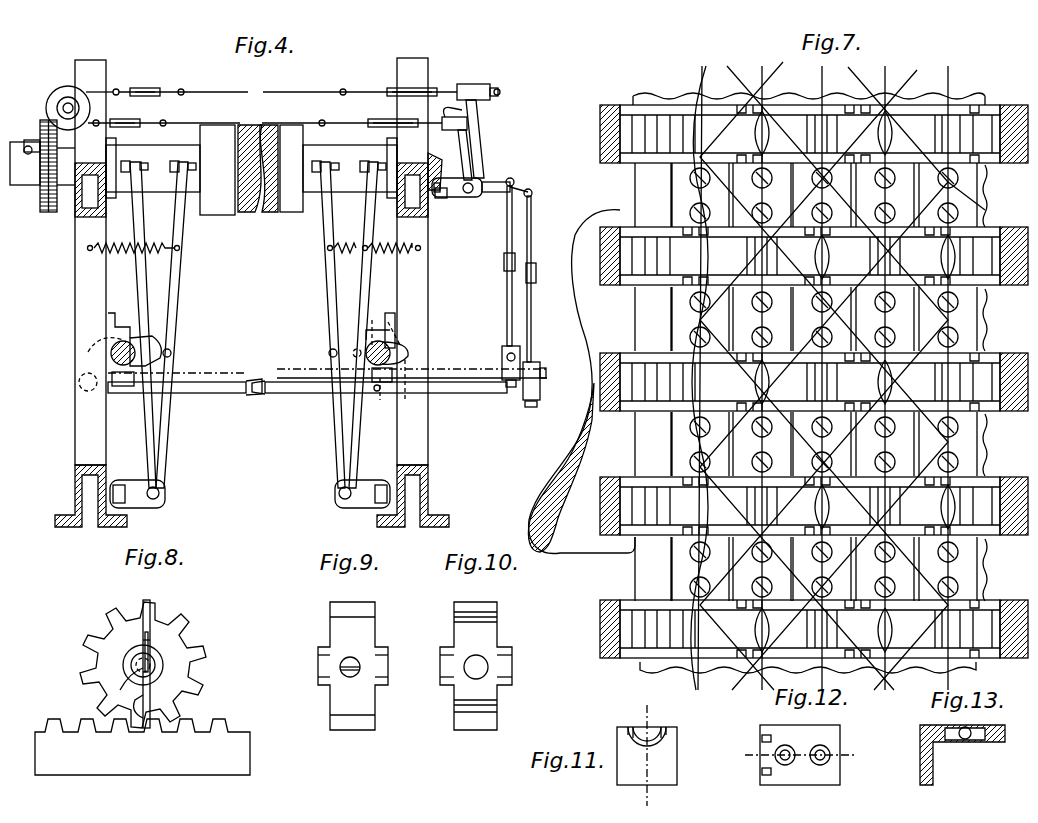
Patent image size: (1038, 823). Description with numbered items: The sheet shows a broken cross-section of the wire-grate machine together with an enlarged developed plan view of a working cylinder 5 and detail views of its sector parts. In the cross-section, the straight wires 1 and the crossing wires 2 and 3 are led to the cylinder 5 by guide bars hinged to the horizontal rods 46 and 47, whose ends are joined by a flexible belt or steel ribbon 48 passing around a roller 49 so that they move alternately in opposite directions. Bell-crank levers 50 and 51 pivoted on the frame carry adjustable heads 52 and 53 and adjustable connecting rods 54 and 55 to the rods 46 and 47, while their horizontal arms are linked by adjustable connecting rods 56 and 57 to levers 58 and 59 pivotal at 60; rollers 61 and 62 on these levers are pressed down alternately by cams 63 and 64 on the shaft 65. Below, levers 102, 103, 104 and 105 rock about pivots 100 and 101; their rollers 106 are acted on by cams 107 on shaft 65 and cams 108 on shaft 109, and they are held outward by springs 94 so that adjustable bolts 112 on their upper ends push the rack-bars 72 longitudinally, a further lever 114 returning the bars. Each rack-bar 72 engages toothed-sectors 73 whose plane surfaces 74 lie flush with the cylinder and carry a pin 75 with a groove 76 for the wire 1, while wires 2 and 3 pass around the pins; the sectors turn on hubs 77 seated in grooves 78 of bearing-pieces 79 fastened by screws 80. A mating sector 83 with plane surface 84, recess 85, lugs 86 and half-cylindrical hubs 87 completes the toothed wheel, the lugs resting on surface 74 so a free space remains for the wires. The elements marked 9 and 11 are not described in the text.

In FIG. 7, the straight wires 1 is at (832, 379).
In FIG. 7, the wires 2 is at (990, 196).
In FIG. 7, the wires 3 is at (695, 86).
In FIG. 4, the working cylinder 5 is at (222, 207).
In FIG. 7, the working cylinder 5 is at (630, 556).
In FIG. 4, the cross beam 9 is at (251, 168).
In FIG. 7, the cross beam 9 is at (568, 554).
In FIG. 4, the toothed gear 11 is at (48, 213).
In FIG. 4, the horizontal rod 46 is at (214, 90).
In FIG. 4, the horizontal rod 47 is at (195, 122).
In FIG. 4, the flexible belt or steel ribbon 48 is at (106, 92).
In FIG. 4, the roller 49 is at (58, 96).
In FIG. 4, the bell-crank lever 50 is at (476, 134).
In FIG. 4, the bell-crank lever 51 is at (478, 158).
In FIG. 4, the adjustable head 52 is at (467, 83).
In FIG. 4, the adjustable head 53 is at (470, 114).
In FIG. 4, the adjustable connecting rod 54 is at (360, 90).
In FIG. 4, the adjustable connecting rod 55 is at (347, 121).
In FIG. 4, the adjustable connecting rod 56 is at (505, 240).
In FIG. 4, the adjustable connecting rod 57 is at (524, 266).
In FIG. 4, the lever 58 is at (470, 394).
In FIG. 4, the lever 59 is at (480, 369).
In FIG. 4, the pivot 60 is at (79, 384).
In FIG. 4, the roller 61 is at (380, 392).
In FIG. 4, the roller 62 is at (372, 405).
In FIG. 4, the cam 63 is at (406, 396).
In FIG. 4, the cam 64 is at (372, 330).
In FIG. 4, the shaft 65 is at (392, 345).
In FIG. 7, the rack-bar 72 is at (814, 381).
In FIG. 8, the toothed-sector 73 is at (210, 690).
In FIG. 9, the toothed-sector 73 is at (332, 728).
In FIG. 7, the plane surface 74 is at (660, 290).
In FIG. 8, the plane surface 74 is at (150, 640).
In FIG. 9, the plane surface 74 is at (335, 624).
In FIG. 7, the projecting pin 75 is at (897, 135).
In FIG. 8, the projecting pin 75 is at (150, 680).
In FIG. 9, the projecting pin 75 is at (350, 657).
In FIG. 8, the groove 76 is at (150, 668).
In FIG. 9, the groove 76 is at (362, 667).
In FIG. 7, the hubs 77 is at (956, 642).
In FIG. 8, the hubs 77 is at (165, 668).
In FIG. 9, the hubs 77 is at (316, 684).
In FIG. 11, the groove 78 is at (658, 744).
In FIG. 12, the groove 78 is at (772, 772).
In FIG. 13, the groove 78 is at (921, 736).
In FIG. 7, the bearing-piece 79 is at (968, 566).
In FIG. 11, the bearing-piece 79 is at (670, 764).
In FIG. 12, the bearing-piece 79 is at (830, 772).
In FIG. 13, the bearing-piece 79 is at (934, 760).
In FIG. 7, the screws 80 is at (692, 548).
In FIG. 8, the toothed-sector 83 is at (85, 663).
In FIG. 10, the toothed-sector 83 is at (458, 728).
In FIG. 8, the plane surface 84 is at (152, 628).
In FIG. 10, the plane surface 84 is at (458, 694).
In FIG. 8, the recess 85 is at (125, 657).
In FIG. 10, the recess 85 is at (470, 666).
In FIG. 8, the lugs 86 is at (120, 622).
In FIG. 10, the lugs 86 is at (456, 626).
In FIG. 8, the half-cylindrical hubs 87 is at (118, 690).
In FIG. 10, the half-cylindrical hubs 87 is at (445, 646).
In FIG. 4, the springs 94 is at (152, 246).
In FIG. 4, the pivot 100 is at (338, 494).
In FIG. 4, the pivot 101 is at (160, 494).
In FIG. 4, the lever 102 is at (355, 296).
In FIG. 4, the lever 103 is at (325, 272).
In FIG. 4, the lever 104 is at (168, 275).
In FIG. 4, the lever 105 is at (145, 312).
In FIG. 4, the rollers 106 is at (172, 353).
In FIG. 4, the cams 107 is at (330, 342).
In FIG. 4, the cams 108 is at (88, 352).
In FIG. 4, the shaft 109 is at (115, 340).
In FIG. 4, the adjustable bolts 112 is at (192, 167).
In FIG. 7, the lever 114 is at (690, 138).